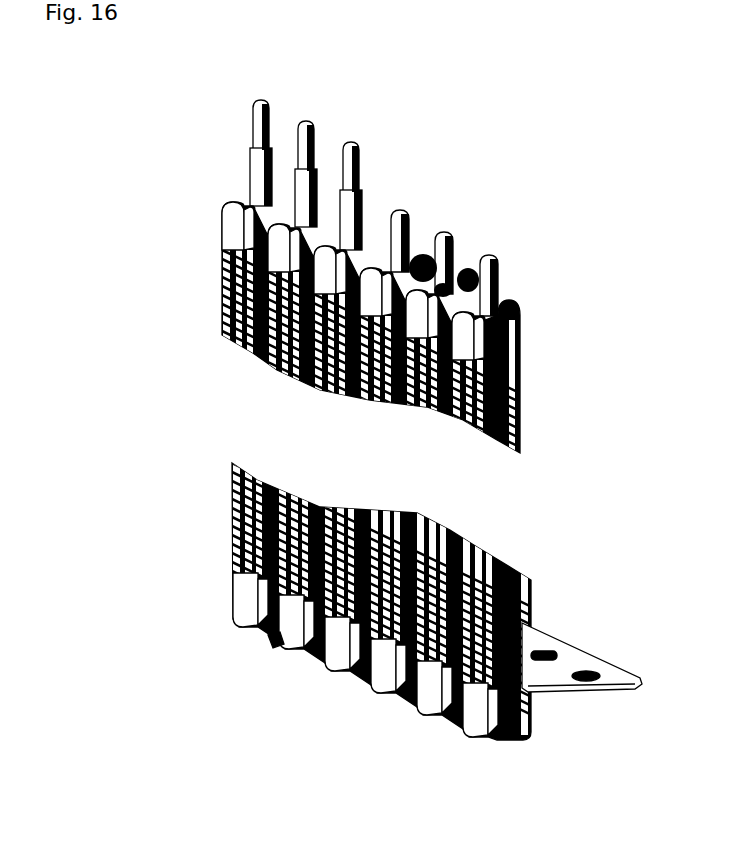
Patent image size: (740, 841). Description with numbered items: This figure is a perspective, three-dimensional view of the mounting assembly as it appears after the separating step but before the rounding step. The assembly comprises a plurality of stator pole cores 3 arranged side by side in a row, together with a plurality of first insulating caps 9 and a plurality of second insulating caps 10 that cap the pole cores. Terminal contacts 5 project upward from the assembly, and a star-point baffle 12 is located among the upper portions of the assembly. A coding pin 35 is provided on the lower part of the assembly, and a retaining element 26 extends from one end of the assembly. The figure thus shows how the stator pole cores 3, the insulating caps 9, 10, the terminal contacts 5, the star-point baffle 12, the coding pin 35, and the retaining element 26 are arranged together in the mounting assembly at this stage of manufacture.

The terminal contacts 5 is at (254, 158).
The first insulating caps 9 is at (238, 225).
The star-point baffle 12 is at (460, 268).
The stator pole cores 3 is at (237, 557).
The second insulating caps 10 is at (239, 608).
The coding pin 35 is at (277, 644).
The retaining element 26 is at (572, 656).